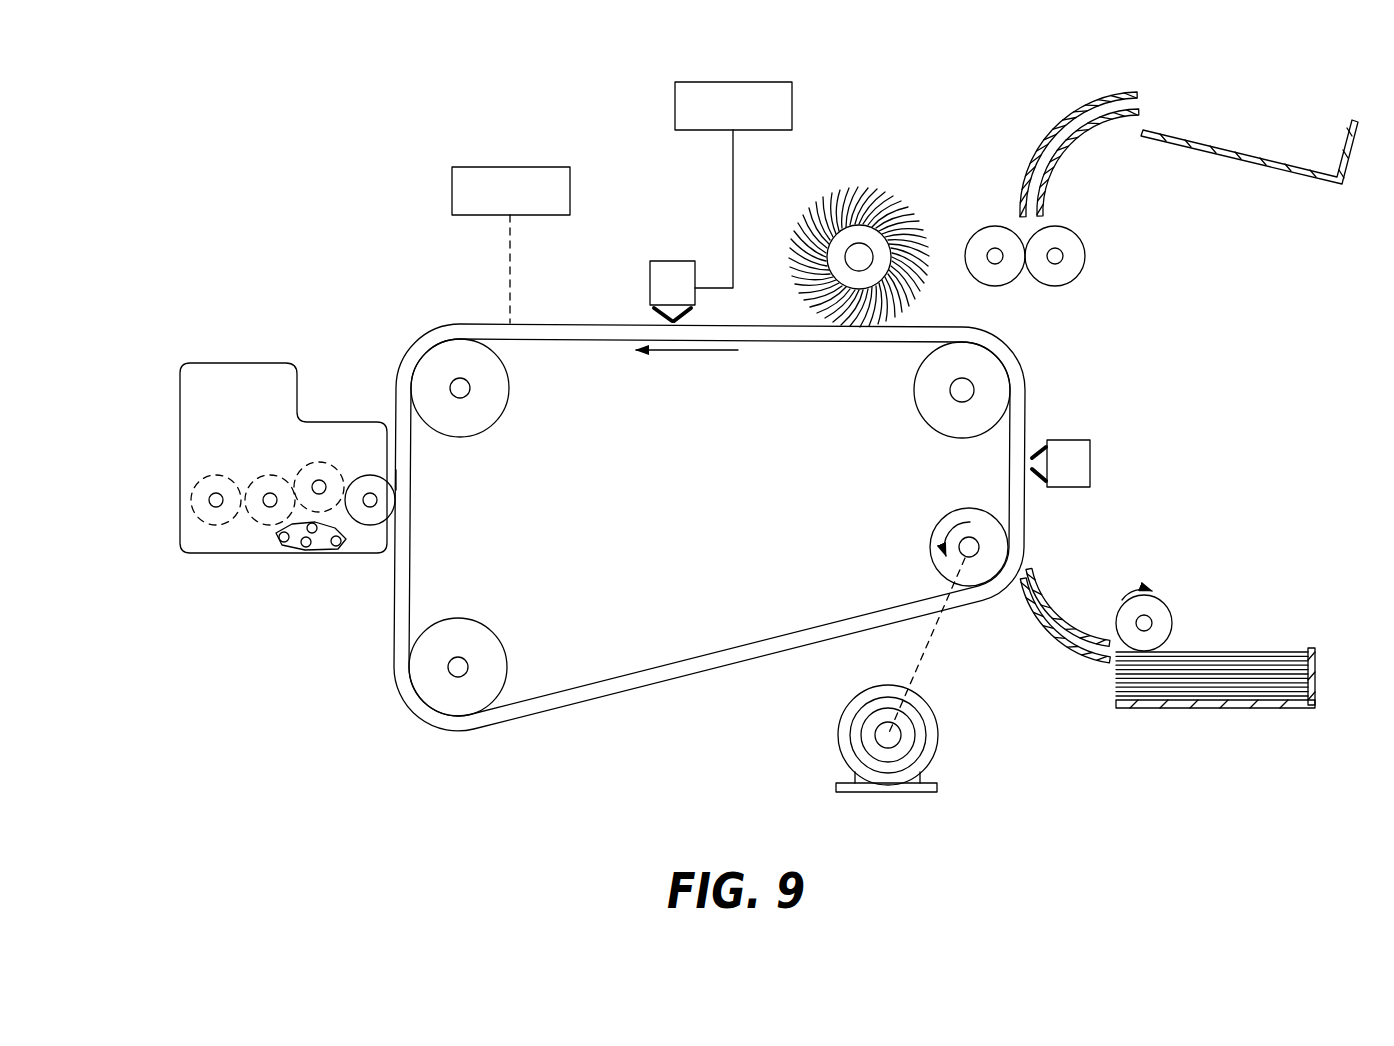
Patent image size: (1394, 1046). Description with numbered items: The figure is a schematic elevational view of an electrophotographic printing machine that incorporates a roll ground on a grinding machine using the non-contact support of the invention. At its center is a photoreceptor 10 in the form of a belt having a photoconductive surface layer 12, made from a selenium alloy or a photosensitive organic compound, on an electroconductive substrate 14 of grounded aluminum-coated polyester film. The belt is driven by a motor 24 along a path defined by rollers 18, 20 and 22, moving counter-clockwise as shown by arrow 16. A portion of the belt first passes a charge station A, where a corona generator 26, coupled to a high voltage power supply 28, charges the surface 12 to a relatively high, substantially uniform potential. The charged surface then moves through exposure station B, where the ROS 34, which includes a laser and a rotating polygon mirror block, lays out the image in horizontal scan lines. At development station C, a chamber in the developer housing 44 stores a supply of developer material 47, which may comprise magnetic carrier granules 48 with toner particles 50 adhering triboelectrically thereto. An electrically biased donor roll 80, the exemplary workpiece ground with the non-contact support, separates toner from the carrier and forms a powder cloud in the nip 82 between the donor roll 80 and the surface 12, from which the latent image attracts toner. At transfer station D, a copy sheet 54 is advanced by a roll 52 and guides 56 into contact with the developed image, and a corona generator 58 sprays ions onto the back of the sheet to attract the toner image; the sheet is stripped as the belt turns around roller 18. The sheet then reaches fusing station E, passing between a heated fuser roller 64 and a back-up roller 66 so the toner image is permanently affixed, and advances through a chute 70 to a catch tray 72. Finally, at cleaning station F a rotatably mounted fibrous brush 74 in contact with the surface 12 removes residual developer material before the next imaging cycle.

The photoreceptor 10 is at (709, 527).
The photoconductive surface layer 12 is at (710, 683).
The electroconductive substrate 14 is at (411, 500).
The arrow 16 is at (690, 353).
The roller 18 is at (945, 428).
The roller 20 is at (493, 386).
The roller 22 is at (945, 527).
The motor 24 is at (948, 718).
The corona generator 26 is at (654, 253).
The high voltage power supply 28 is at (755, 124).
The ROS 34 is at (563, 176).
The developer housing 44 is at (323, 423).
The developer material 47 is at (317, 494).
The magnetic carrier granules 48 is at (284, 541).
The toner particles 50 is at (304, 547).
The roll 52 is at (1162, 612).
The copy sheet 54 is at (1256, 651).
The guides 56 is at (1065, 620).
The corona generator 58 is at (1091, 458).
The fuser roller 64 is at (980, 276).
The back-up roller 66 is at (1076, 255).
The chute 70 is at (1052, 137).
The catch tray 72 is at (1243, 155).
The fibrous brush 74 is at (850, 207).
The donor roll 80 is at (397, 508).
The nip 82 is at (396, 480).
The charge station A is at (775, 183).
The exposure station B is at (526, 202).
The development station C is at (317, 506).
The transfer station D is at (1109, 421).
The fusing station E is at (1150, 204).
The cleaning station F is at (860, 211).